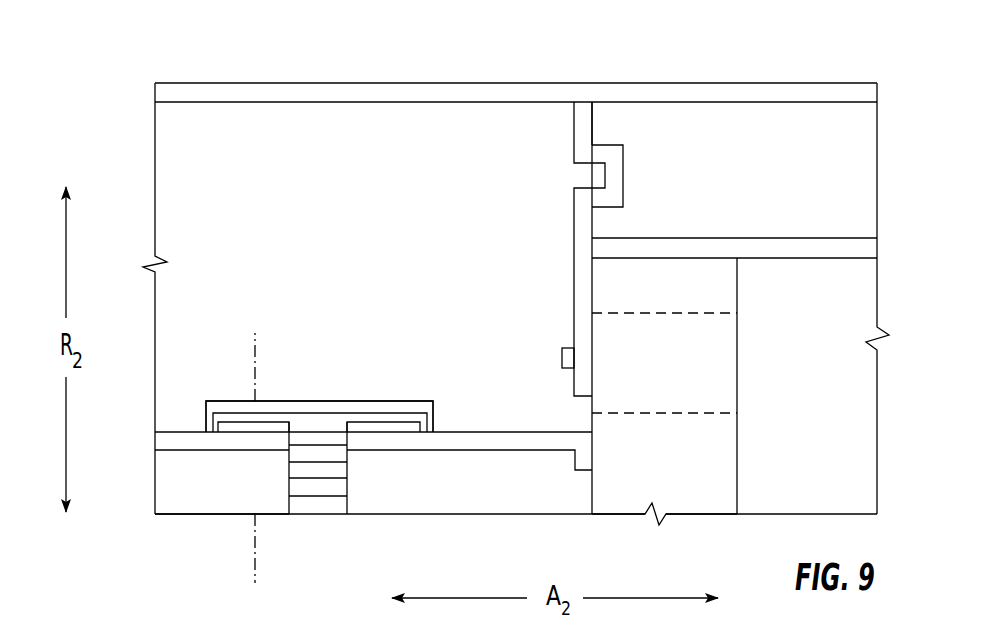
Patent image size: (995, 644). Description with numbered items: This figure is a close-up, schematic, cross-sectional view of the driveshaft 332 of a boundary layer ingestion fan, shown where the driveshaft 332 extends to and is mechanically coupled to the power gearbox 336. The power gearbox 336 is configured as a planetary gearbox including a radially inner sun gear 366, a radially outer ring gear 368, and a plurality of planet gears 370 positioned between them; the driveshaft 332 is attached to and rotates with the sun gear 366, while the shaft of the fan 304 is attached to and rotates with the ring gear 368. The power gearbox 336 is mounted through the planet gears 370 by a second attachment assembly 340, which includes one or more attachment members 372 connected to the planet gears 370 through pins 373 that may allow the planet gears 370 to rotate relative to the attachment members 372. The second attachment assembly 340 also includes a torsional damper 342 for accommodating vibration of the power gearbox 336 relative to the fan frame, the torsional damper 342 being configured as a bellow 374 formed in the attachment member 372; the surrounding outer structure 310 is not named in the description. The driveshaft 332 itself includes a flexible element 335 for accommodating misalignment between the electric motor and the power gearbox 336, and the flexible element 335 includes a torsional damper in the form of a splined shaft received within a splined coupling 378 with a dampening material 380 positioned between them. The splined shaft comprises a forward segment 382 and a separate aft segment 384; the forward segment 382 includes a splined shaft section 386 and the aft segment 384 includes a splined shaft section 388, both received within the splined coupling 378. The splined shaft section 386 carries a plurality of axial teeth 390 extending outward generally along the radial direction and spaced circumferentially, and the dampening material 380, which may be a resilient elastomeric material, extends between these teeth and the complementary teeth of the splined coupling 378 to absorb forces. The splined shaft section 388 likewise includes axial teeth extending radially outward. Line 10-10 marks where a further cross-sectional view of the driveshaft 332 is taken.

The housing 310 is at (405, 88).
The second attachment assembly 340 is at (552, 153).
The bellow 374 is at (617, 164).
The torsional damper 342 is at (665, 193).
The fan 304 is at (832, 245).
The attachment member 372 is at (584, 223).
The pin 373 is at (560, 358).
The ring gear 368 is at (712, 295).
The planet gears 370 is at (712, 378).
The sun gear 366 is at (712, 467).
The power gearbox 336 is at (823, 313).
The driveshaft 332 is at (182, 408).
The axial teeth 390 is at (237, 428).
The splined coupling 378 is at (337, 400).
The dampening material 380 is at (383, 407).
The flexible element 335 is at (383, 367).
The aft segment 384 is at (477, 442).
The forward segment 382 is at (167, 442).
The splined shaft section 386 is at (243, 485).
The splined shaft section 388 is at (410, 467).
The Line 10- 10 is at (255, 333).